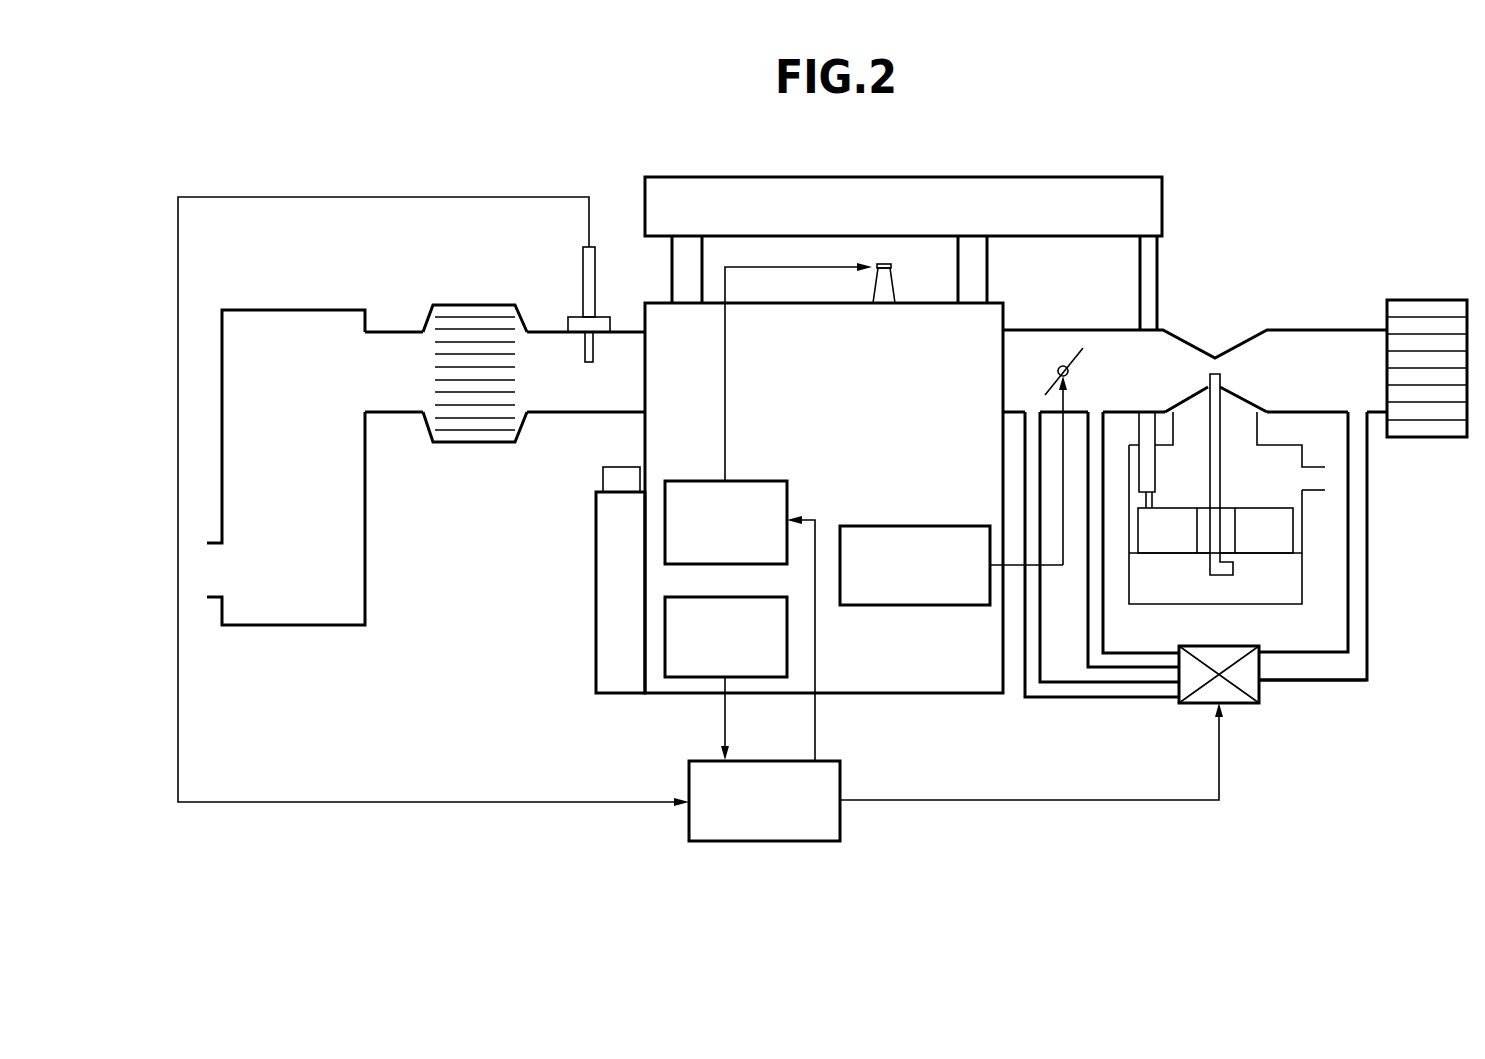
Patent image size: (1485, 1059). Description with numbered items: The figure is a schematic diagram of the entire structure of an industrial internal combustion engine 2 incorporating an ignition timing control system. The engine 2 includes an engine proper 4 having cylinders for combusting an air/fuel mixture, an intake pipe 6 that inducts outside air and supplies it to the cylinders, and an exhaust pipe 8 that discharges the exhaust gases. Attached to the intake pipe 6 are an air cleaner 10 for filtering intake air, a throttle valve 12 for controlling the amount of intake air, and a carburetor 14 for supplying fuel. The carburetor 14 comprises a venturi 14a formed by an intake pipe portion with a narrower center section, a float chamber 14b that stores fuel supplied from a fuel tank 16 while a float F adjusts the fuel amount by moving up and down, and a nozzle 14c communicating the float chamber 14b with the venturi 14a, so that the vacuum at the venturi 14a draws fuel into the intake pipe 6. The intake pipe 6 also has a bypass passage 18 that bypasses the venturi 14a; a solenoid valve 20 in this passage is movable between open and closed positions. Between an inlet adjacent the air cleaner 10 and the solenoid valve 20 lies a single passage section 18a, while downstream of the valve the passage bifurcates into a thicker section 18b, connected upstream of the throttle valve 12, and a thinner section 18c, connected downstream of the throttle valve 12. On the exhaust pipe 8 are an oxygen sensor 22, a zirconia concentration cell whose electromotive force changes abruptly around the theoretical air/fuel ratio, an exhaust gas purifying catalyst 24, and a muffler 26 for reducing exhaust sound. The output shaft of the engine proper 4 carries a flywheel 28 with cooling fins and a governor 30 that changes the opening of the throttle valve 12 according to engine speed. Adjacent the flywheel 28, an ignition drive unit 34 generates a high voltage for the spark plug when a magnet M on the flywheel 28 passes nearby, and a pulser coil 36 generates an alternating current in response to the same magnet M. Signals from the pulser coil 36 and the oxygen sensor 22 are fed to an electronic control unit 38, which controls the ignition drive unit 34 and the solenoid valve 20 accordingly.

The industrial internal combustion engine 2 is at (1272, 201).
The engine proper 4 is at (957, 693).
The intake pipe 6 is at (1293, 330).
The exhaust pipe 8 is at (548, 412).
The air cleaner 10 is at (1405, 300).
The throttle valve 12 is at (1066, 363).
The carburetor 14 is at (1283, 577).
The venturi 14a is at (1182, 352).
The float chamber 14b is at (1270, 488).
The nozzle 14c is at (1215, 438).
The fuel tank 16 is at (1127, 177).
The bypass passage 18 is at (1357, 653).
The single passage section 18a is at (1313, 683).
The bifurcated passage section 18b is at (1138, 667).
The bifurcated passage section 18c is at (1066, 697).
The solenoid valve 20 is at (1252, 705).
The oxygen sensor 22 is at (583, 262).
The exhaust gas purifying catalyst 24 is at (464, 425).
The muffler 26 is at (303, 626).
The flywheel 28 is at (596, 572).
The governor 30 is at (948, 526).
The ignition drive unit 34 is at (752, 481).
The pulser coil 36 is at (790, 625).
The electronic control unit 38 is at (700, 761).
The magnet M is at (612, 467).
The float F is at (1173, 505).